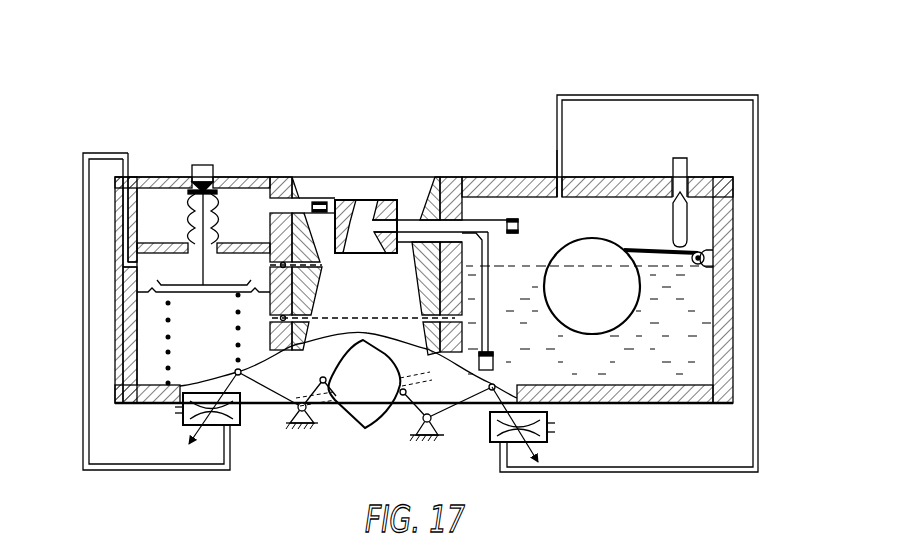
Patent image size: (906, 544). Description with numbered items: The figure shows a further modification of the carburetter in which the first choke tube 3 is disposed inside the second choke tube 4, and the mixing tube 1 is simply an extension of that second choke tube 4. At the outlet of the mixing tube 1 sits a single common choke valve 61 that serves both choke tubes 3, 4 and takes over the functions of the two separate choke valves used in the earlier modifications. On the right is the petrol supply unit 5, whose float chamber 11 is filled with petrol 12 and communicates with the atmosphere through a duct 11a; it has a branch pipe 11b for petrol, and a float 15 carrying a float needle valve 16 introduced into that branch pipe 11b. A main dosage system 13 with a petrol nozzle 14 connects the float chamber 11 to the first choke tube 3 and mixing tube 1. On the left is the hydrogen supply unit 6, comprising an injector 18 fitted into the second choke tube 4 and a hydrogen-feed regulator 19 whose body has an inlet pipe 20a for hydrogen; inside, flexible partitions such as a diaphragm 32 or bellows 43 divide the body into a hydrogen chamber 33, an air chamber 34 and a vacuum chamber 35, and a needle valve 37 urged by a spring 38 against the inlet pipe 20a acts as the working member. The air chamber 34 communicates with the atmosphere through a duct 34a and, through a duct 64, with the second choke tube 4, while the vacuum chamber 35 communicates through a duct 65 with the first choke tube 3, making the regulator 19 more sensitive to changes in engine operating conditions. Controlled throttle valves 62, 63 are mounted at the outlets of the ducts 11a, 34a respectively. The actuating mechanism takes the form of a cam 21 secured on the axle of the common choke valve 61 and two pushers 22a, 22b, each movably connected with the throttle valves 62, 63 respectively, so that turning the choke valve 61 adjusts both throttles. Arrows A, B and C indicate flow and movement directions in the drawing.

The mixing tube 1 is at (319, 338).
The first choke tube 3 is at (356, 212).
The second choke tube 4 is at (416, 196).
The petrol supply unit 5 is at (598, 163).
The hydrogen supply unit 6 is at (259, 173).
The float chamber 11 is at (643, 394).
The duct 11a is at (557, 157).
The branch pipe 11b is at (680, 167).
The petrol 12 is at (700, 380).
The main dosage system 13 is at (490, 252).
The petrol nozzle 14 is at (377, 218).
The float 15 is at (592, 243).
The float needle valve 16 is at (680, 225).
The injector 18 is at (318, 199).
The hydrogen-feed regulator 19 is at (124, 408).
The inlet pipe 20a is at (191, 165).
The cam 21 is at (362, 418).
The pusher 22a is at (420, 424).
The pusher 22b is at (302, 412).
The diaphragm 32 is at (152, 295).
The hydrogen chamber 33 is at (148, 196).
The air chamber 34 is at (140, 263).
The duct 34a is at (125, 202).
The vacuum chamber 35 is at (151, 380).
The needle valve 37 is at (203, 279).
The spring 38 is at (236, 340).
The bellows 43 is at (186, 227).
The common choke valve 61 is at (417, 375).
The throttle valve 62 is at (548, 438).
The throttle valve 63 is at (234, 426).
The duct 64 is at (320, 266).
The duct 65 is at (368, 318).
The flow direction A is at (372, 221).
The direction B is at (203, 164).
The direction C is at (388, 194).